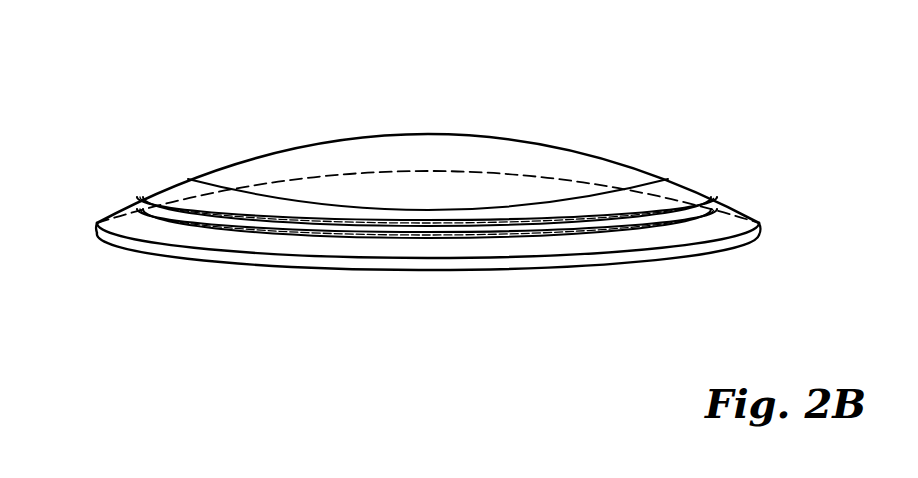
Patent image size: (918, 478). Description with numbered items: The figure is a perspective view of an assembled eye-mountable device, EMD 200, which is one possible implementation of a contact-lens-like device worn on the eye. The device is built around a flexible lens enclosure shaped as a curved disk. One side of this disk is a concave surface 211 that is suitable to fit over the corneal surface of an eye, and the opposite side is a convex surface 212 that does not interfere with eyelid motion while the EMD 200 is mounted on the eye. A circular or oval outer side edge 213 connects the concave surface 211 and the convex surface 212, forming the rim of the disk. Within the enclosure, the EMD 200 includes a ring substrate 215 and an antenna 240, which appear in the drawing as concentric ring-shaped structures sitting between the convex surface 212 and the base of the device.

The eye-mountable device 200 is at (194, 138).
The concave surface 211 is at (680, 247).
The convex surface 212 is at (651, 163).
The outer side edge 213 is at (576, 262).
The ring substrate 215 is at (140, 198).
The antenna 240 is at (706, 198).